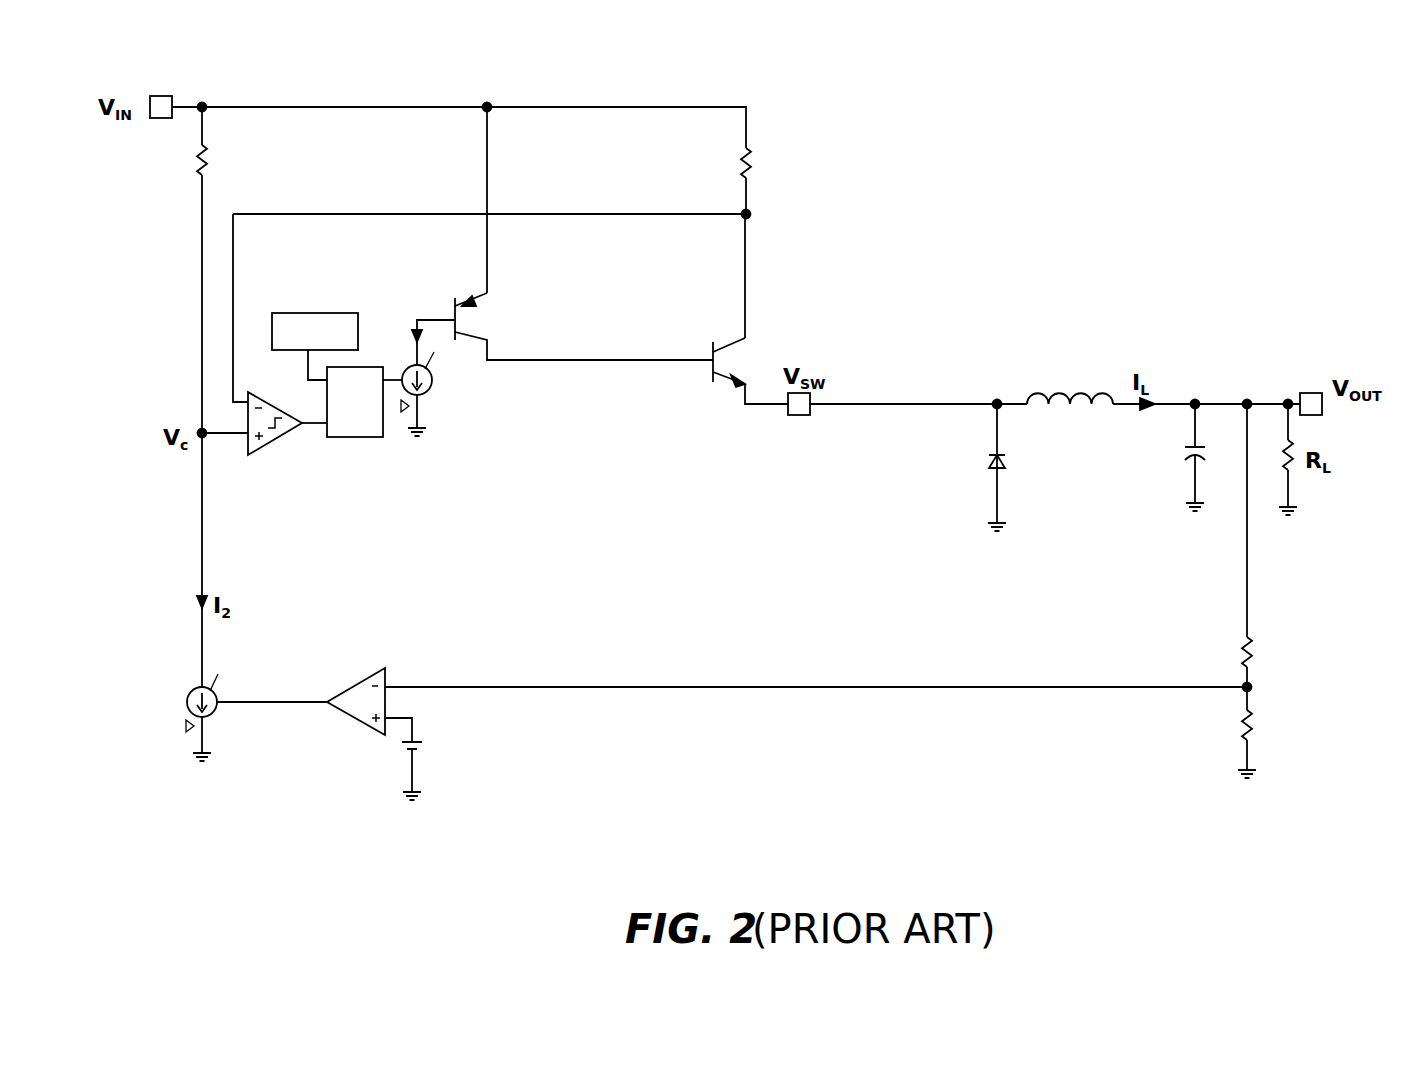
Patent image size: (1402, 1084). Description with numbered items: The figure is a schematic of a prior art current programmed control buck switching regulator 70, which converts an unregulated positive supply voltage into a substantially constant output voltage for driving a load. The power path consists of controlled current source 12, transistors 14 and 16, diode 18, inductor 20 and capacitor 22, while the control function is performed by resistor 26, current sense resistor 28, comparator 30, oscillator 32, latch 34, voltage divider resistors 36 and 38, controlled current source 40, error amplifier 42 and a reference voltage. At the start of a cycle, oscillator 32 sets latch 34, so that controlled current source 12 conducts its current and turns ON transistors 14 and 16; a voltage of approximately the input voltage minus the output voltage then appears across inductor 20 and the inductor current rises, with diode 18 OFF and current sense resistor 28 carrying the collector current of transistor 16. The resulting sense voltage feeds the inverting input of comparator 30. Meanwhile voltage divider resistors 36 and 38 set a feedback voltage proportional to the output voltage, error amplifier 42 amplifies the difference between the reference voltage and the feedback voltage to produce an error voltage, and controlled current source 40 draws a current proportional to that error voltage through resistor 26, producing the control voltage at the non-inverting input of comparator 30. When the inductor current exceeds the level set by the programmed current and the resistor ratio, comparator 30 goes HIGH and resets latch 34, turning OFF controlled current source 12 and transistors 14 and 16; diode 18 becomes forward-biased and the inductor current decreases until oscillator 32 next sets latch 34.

The controlled current source 12 is at (428, 392).
The transistor 14 is at (470, 330).
The transistor 16 is at (740, 340).
The diode 18 is at (987, 462).
The inductor 20 is at (1037, 392).
The capacitor 22 is at (1182, 452).
The resistor 26 is at (210, 160).
The current sense resistor 28 is at (754, 160).
The comparator 30 is at (272, 444).
The oscillator 32 is at (318, 313).
The latch 34 is at (356, 437).
The voltage divider resistor 36 is at (1253, 641).
The voltage divider resistor 38 is at (1253, 714).
The controlled current source 40 is at (186, 698).
The error amplifier 42 is at (348, 687).
The current programmed control buck switching regulator 70 is at (1228, 258).